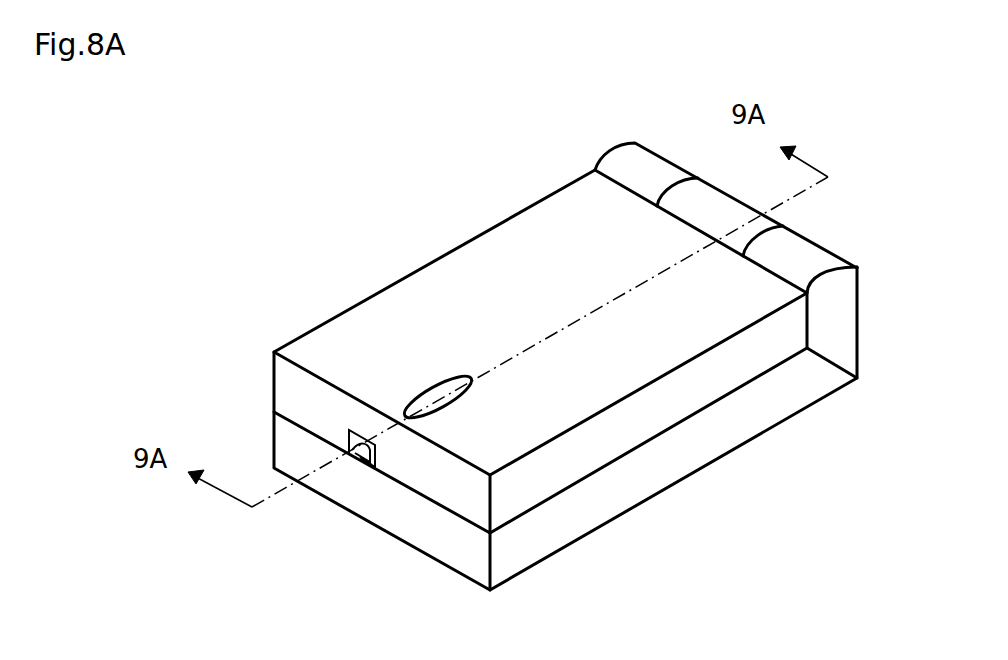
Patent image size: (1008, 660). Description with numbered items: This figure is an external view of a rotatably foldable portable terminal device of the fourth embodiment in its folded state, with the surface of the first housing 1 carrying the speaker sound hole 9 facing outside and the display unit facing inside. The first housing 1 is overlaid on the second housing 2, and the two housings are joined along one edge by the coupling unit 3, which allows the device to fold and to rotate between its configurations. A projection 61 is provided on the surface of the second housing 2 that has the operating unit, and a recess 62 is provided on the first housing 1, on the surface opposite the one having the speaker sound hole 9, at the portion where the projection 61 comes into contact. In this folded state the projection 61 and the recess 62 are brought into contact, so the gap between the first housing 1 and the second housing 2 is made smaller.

The first housing 1 is at (495, 263).
The second housing 2 is at (635, 485).
The coupling unit 3 is at (773, 218).
The speaker sound hole 9 is at (410, 384).
The projection 61 is at (370, 467).
The recess 62 is at (349, 431).